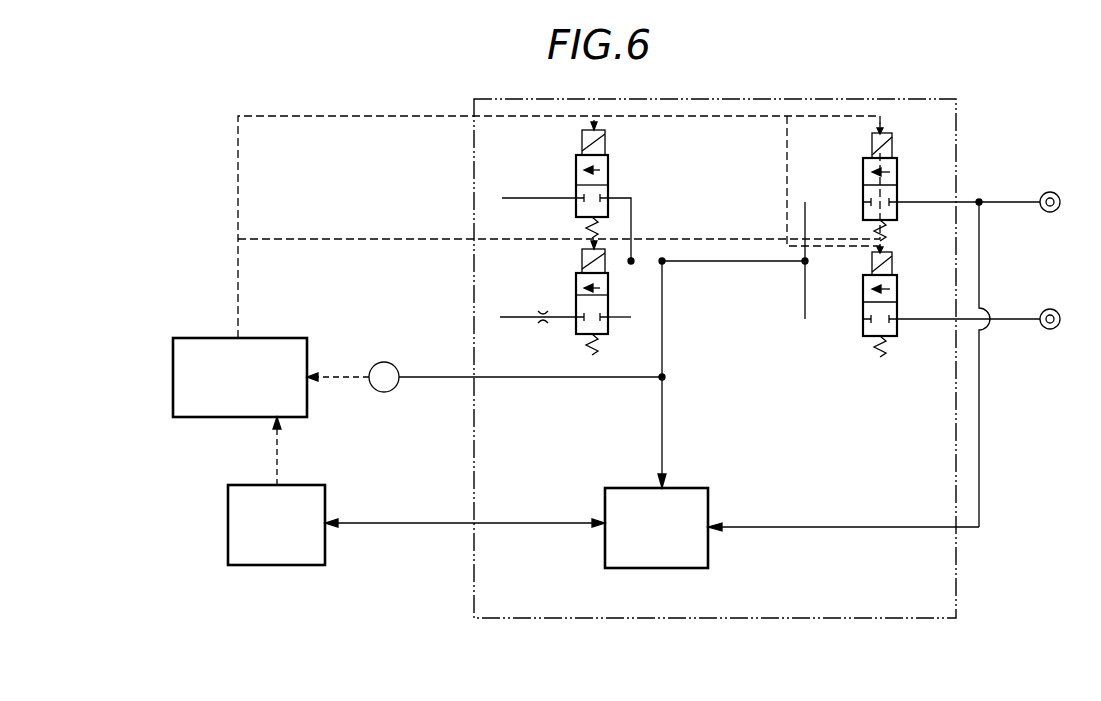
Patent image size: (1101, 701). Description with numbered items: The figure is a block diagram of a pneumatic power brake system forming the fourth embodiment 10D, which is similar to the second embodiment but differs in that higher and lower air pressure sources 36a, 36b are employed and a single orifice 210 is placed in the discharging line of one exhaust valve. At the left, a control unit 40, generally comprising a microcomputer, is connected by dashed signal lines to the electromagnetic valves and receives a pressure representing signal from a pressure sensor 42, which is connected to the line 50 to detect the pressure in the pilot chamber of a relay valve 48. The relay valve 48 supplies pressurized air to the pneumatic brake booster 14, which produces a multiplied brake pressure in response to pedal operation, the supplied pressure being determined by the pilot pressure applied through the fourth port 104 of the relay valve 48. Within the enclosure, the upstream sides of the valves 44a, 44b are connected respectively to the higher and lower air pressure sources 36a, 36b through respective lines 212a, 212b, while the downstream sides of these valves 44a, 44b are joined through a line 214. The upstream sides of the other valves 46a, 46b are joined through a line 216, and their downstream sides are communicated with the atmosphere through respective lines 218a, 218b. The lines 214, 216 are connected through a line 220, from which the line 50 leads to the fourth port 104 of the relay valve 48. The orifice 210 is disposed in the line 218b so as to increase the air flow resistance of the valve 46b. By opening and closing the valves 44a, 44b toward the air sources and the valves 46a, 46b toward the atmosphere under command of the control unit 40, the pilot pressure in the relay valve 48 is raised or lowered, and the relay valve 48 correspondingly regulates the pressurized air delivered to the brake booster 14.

The fourth embodiment pneumatic power brake system 10D is at (710, 655).
The pneumatic brake booster 14 is at (305, 567).
The control unit 40 is at (273, 337).
The pressure sensor 42 is at (394, 389).
The first electromagnetic valve 44a is at (897, 170).
The first electromagnetic valve 44b is at (897, 330).
The second electromagnetic valve 46a is at (608, 170).
The second electromagnetic valve 46b is at (610, 320).
The relay valve 48 is at (710, 498).
The line 50 is at (663, 325).
The fourth port 104 is at (665, 484).
The orifice 210 is at (543, 320).
The line 212a is at (934, 200).
The line 212b is at (930, 318).
The line 214 is at (804, 300).
The line 216 is at (632, 225).
The line 218a is at (524, 196).
The line 218b is at (520, 314).
The line 220 is at (717, 263).
The higher air pressure source 36a is at (1056, 212).
The lower air pressure source 36b is at (1052, 329).